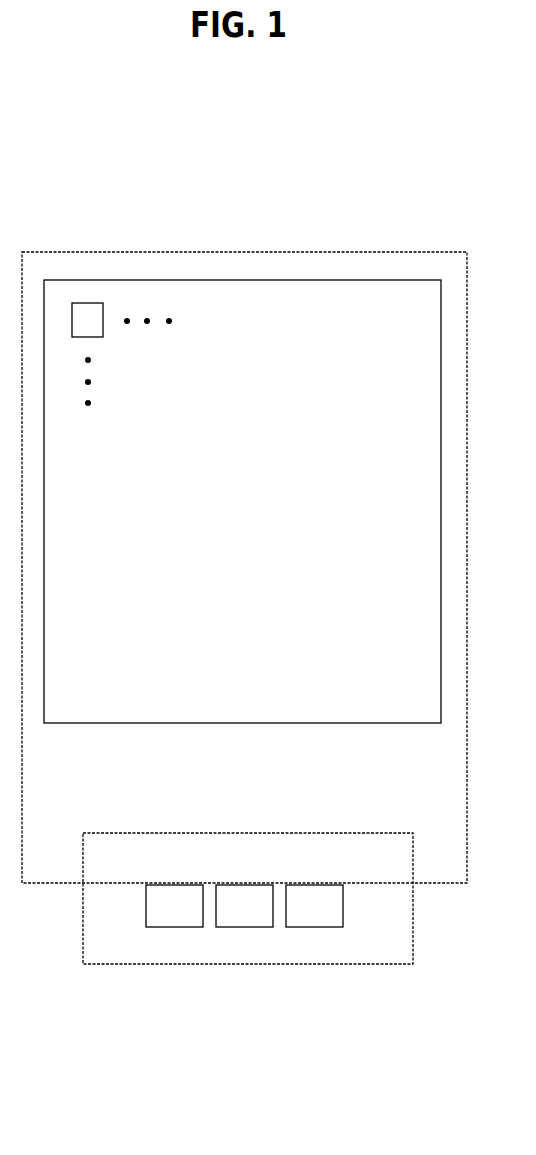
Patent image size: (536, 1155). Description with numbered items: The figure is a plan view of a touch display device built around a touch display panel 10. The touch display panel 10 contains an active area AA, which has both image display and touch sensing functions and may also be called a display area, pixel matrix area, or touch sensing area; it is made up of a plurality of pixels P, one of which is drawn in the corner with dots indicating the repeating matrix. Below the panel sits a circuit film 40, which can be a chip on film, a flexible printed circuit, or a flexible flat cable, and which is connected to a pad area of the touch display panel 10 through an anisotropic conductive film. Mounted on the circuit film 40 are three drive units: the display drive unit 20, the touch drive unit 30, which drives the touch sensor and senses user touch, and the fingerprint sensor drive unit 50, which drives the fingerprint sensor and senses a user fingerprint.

The touch display panel 10 is at (88, 233).
The active area AA is at (252, 512).
The pixel P is at (87, 320).
The circuit film 40 is at (403, 951).
The fingerprint sensor drive unit 50 is at (189, 920).
The display drive unit 20 is at (259, 920).
The touch drive unit 30 is at (329, 920).